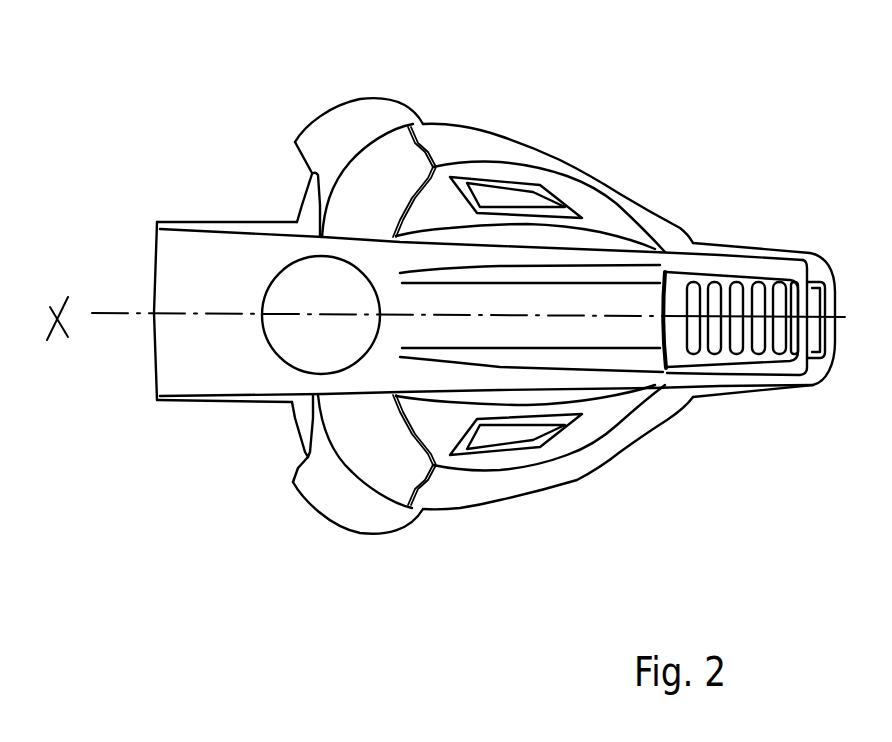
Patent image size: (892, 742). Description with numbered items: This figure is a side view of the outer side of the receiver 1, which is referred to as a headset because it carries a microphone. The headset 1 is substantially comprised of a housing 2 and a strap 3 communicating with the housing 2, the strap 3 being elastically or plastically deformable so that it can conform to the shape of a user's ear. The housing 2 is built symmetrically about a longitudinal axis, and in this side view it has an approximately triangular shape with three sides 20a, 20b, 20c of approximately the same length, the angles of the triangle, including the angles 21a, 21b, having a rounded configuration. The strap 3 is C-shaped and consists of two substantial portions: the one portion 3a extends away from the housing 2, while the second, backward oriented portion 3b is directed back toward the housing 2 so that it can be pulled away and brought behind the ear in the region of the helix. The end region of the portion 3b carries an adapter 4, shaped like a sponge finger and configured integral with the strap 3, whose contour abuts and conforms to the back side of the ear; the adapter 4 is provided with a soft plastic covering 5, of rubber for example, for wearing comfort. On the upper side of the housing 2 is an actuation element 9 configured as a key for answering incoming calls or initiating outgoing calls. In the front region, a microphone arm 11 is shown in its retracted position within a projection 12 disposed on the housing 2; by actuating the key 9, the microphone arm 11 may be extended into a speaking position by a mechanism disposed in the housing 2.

The receiver 1 is at (702, 132).
The housing 2 is at (477, 495).
The strap 3 is at (155, 438).
The strap portion extending away from the housing 3a is at (183, 257).
The backward oriented strap portion 3b is at (261, 400).
The adapter 4 is at (303, 200).
The soft plastic covering 5 is at (363, 518).
The actuation element 9 is at (318, 338).
The microphone arm 11 is at (747, 287).
The projection 12 is at (761, 423).
The first side of the housing 20a is at (550, 152).
The second side of the housing 20b is at (577, 480).
The third side of the housing 20c is at (342, 180).
The first angle of the housing 21a is at (414, 107).
The second angle of the housing 21b is at (419, 528).